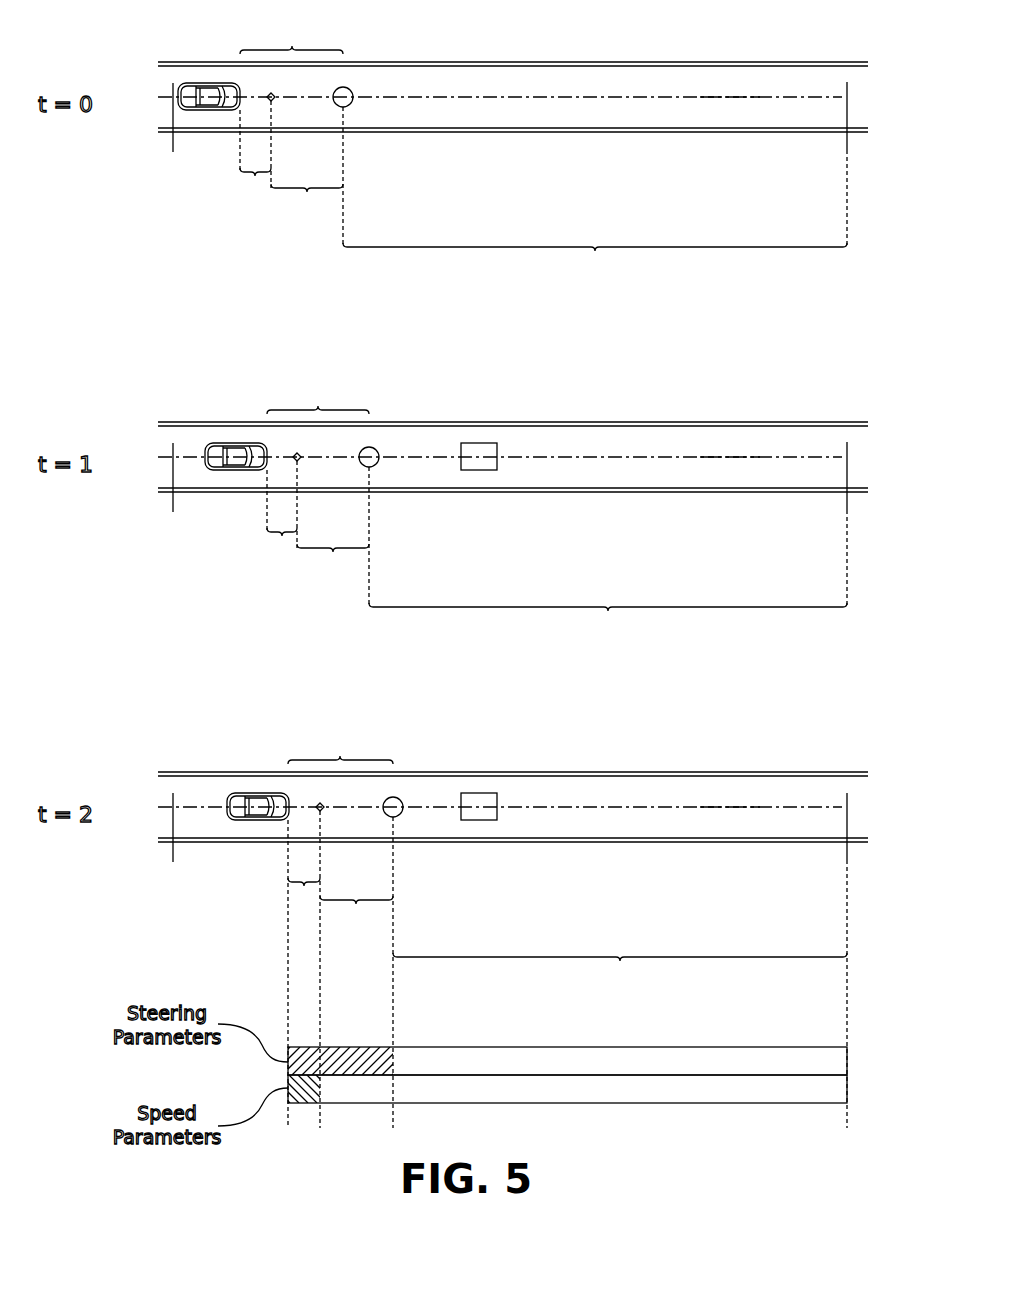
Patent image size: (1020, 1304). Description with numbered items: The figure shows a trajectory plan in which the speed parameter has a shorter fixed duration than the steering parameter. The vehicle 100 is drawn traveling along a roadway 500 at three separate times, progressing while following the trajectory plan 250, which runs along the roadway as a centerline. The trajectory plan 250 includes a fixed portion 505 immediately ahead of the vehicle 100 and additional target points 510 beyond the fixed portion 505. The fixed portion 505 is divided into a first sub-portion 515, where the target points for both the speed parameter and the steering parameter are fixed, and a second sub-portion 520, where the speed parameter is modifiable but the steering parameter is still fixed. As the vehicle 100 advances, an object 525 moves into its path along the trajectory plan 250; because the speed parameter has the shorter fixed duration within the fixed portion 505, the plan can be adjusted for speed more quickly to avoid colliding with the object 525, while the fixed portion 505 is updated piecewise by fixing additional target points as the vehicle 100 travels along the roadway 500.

The vehicle 100 is at (254, 794).
The trajectory plan 250 is at (717, 806).
The roadway 500 is at (800, 772).
The fixed portion 505 is at (316, 388).
The additional target points 510 is at (595, 616).
The first sub-portion 515 is at (304, 888).
The second sub-portion 520 is at (332, 558).
The object 525 is at (476, 793).